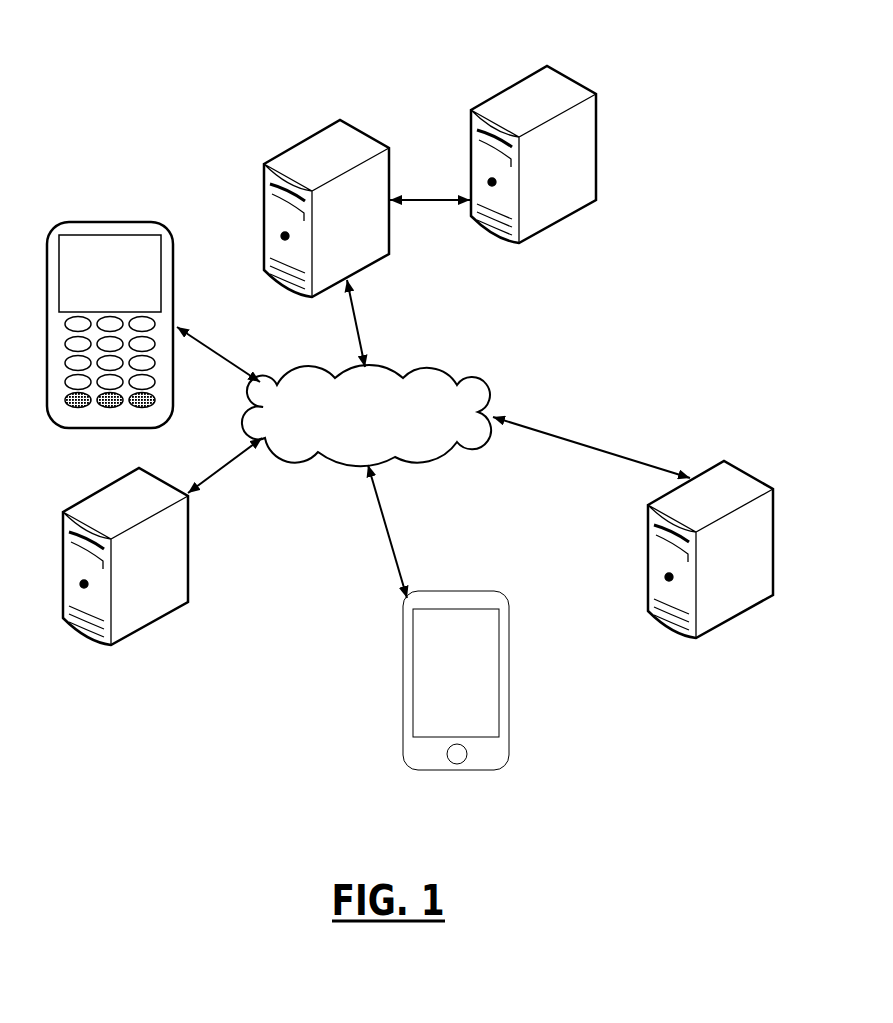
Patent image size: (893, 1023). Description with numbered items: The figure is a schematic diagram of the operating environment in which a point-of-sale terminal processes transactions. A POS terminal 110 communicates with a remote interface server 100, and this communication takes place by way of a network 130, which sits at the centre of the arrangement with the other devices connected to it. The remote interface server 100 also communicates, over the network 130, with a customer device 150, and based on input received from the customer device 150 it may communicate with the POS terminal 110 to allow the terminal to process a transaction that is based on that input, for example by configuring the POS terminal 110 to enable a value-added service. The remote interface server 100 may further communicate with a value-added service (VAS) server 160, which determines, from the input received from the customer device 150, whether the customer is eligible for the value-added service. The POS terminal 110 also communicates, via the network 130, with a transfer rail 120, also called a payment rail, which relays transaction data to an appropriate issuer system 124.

The remote interface server 100 is at (740, 480).
The POS terminal 110 is at (107, 222).
The transfer rail 120 is at (355, 138).
The issuer system 124 is at (592, 93).
The network 130 is at (349, 428).
The customer device 150 is at (437, 590).
The value-added service (VAS) server 160 is at (153, 488).